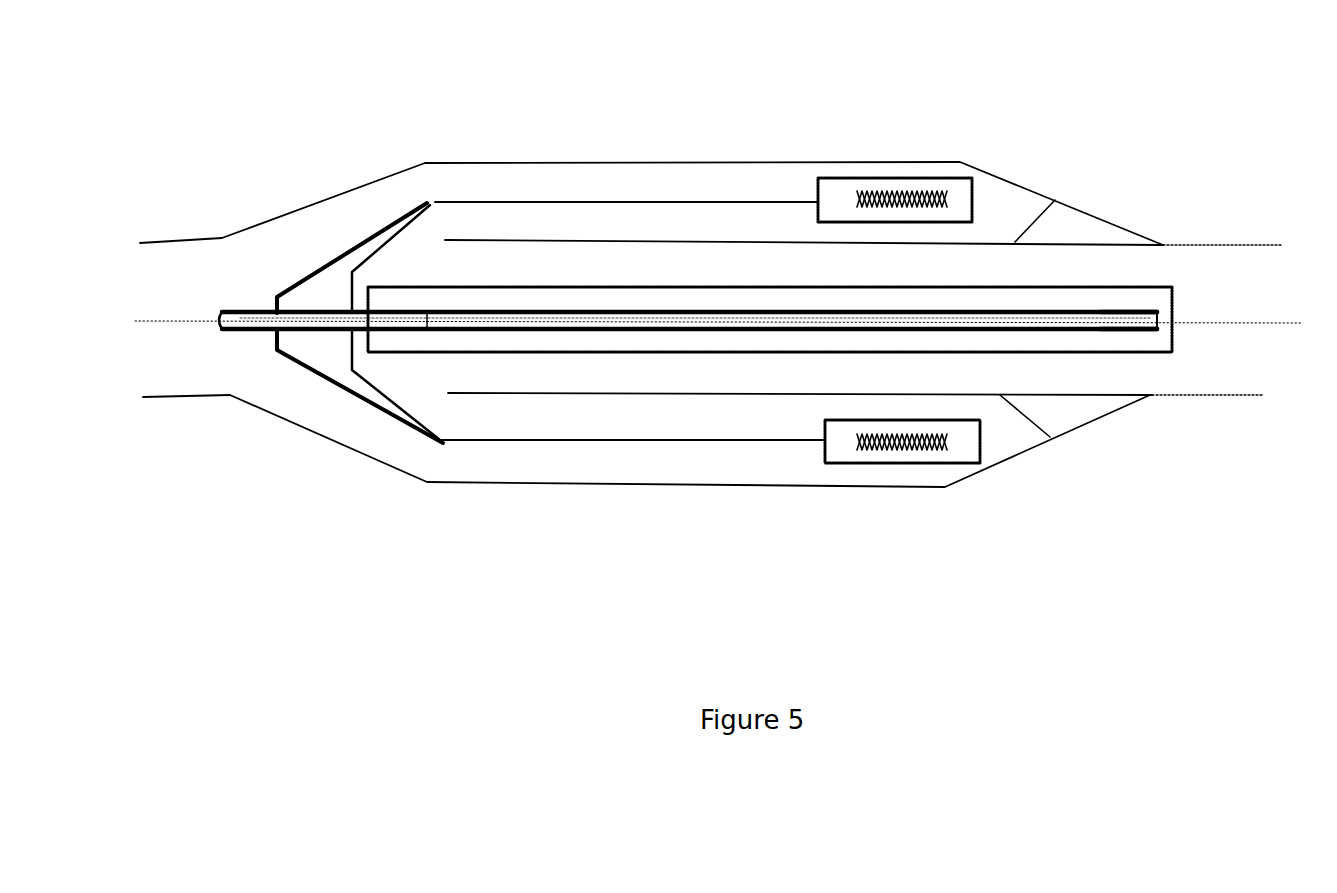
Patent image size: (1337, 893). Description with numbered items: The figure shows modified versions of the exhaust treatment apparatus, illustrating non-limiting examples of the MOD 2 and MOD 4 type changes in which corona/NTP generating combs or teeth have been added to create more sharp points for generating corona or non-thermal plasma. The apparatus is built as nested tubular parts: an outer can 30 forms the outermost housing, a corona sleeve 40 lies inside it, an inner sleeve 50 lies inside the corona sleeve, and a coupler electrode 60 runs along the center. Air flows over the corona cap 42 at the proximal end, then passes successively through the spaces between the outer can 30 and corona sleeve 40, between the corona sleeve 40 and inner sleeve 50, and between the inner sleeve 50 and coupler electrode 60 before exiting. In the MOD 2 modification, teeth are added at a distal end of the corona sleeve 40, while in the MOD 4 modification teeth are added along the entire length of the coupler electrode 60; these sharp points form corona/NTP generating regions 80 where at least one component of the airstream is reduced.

The outer can 30 is at (587, 160).
The corona sleeve 40 is at (651, 200).
The inner sleeve 50 is at (708, 238).
The corona cap 42 is at (340, 255).
The coupler electrode 60 is at (1148, 323).
The corona/NTP generating region 80 is at (837, 185).
The MOD 2 modification MOD 2 is at (933, 180).
The MOD 4 modification MOD 4 is at (1093, 288).